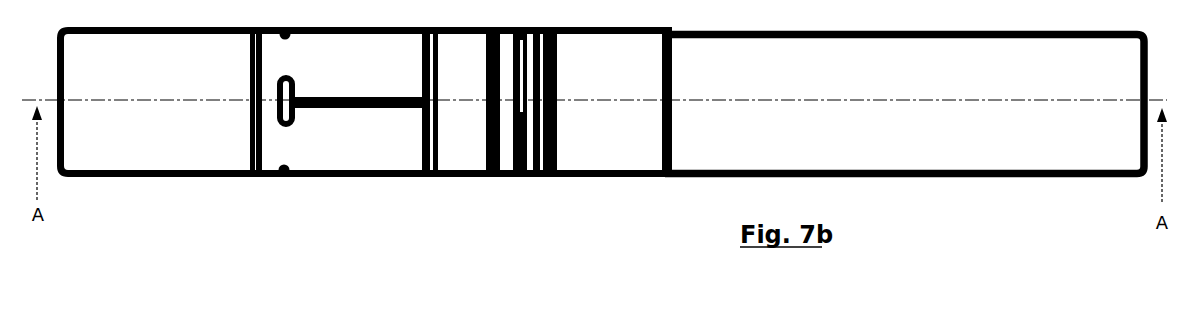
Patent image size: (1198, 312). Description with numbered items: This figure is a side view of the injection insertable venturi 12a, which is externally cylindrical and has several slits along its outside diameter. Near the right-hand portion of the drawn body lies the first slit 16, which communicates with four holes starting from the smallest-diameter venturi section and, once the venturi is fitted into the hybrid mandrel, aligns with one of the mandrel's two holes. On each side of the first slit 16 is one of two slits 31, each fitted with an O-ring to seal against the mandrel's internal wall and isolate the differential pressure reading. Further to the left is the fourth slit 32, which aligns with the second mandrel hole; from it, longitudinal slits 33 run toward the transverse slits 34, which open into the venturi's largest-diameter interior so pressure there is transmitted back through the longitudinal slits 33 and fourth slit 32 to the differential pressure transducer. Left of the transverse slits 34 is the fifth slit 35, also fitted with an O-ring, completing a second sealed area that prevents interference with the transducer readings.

The fifth slit 35 is at (252, 176).
The transverse slits 34 is at (287, 38).
The longitudinal slits 33 is at (377, 110).
The fourth slit 32 is at (432, 178).
The slits fitted with O-rings 31 is at (495, 178).
The first slit 16 is at (518, 178).
The injection insertable venturi 12a is at (943, 206).